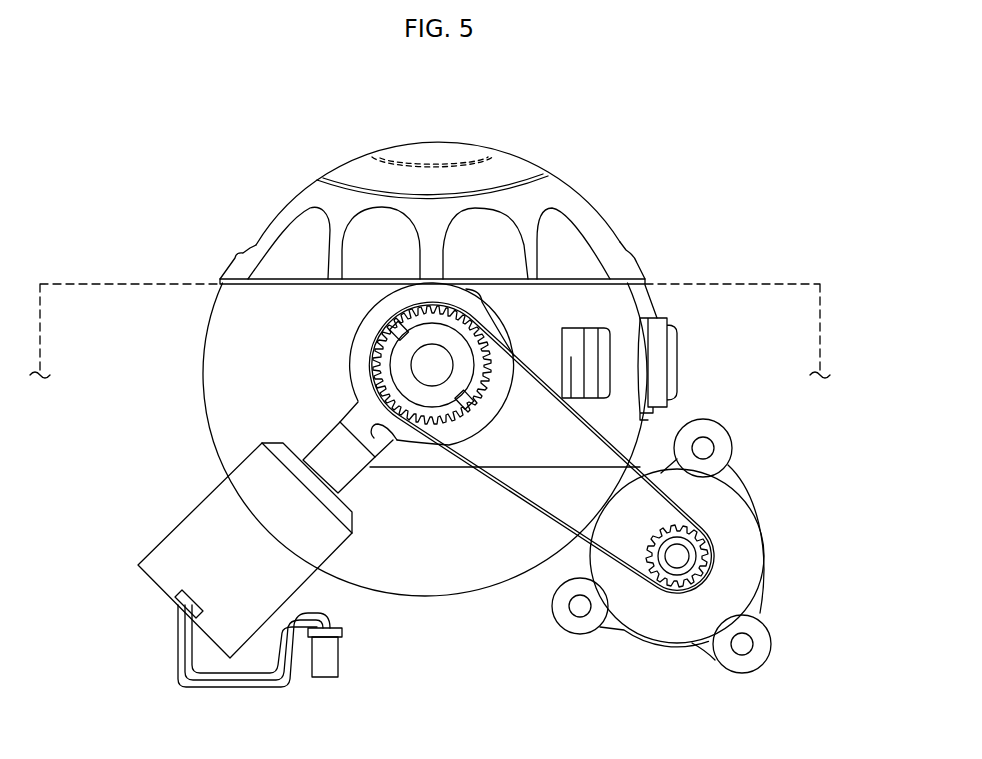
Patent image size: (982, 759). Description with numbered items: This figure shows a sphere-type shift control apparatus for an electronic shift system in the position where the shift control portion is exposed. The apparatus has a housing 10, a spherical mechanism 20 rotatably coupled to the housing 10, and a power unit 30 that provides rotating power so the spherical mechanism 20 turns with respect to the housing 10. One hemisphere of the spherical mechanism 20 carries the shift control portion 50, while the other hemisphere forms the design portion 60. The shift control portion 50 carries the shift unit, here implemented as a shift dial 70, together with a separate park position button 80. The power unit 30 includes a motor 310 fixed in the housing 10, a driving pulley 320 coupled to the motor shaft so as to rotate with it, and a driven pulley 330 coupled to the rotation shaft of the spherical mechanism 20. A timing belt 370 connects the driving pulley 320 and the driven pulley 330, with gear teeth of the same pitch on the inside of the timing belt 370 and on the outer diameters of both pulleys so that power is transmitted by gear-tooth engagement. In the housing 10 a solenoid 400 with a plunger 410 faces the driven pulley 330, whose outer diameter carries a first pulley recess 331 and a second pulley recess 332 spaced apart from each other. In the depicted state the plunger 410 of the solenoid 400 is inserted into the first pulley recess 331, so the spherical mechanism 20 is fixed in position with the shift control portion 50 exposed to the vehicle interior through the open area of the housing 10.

The housing 10 is at (785, 284).
The spherical mechanism 20 is at (598, 212).
The power unit 30 is at (640, 647).
The shift control portion 50 is at (536, 164).
The design portion 60 is at (443, 566).
The shift dial 70 is at (360, 178).
The park (P) position button 80 is at (432, 166).
The motor 310 is at (743, 567).
The driving pulley 320 is at (706, 546).
The driven pulley 330 is at (373, 320).
The first pulley recess 331 is at (376, 437).
The second pulley recess 332 is at (493, 325).
The timing belt 370 is at (522, 497).
The solenoid 400 is at (183, 546).
The plunger 410 is at (365, 425).